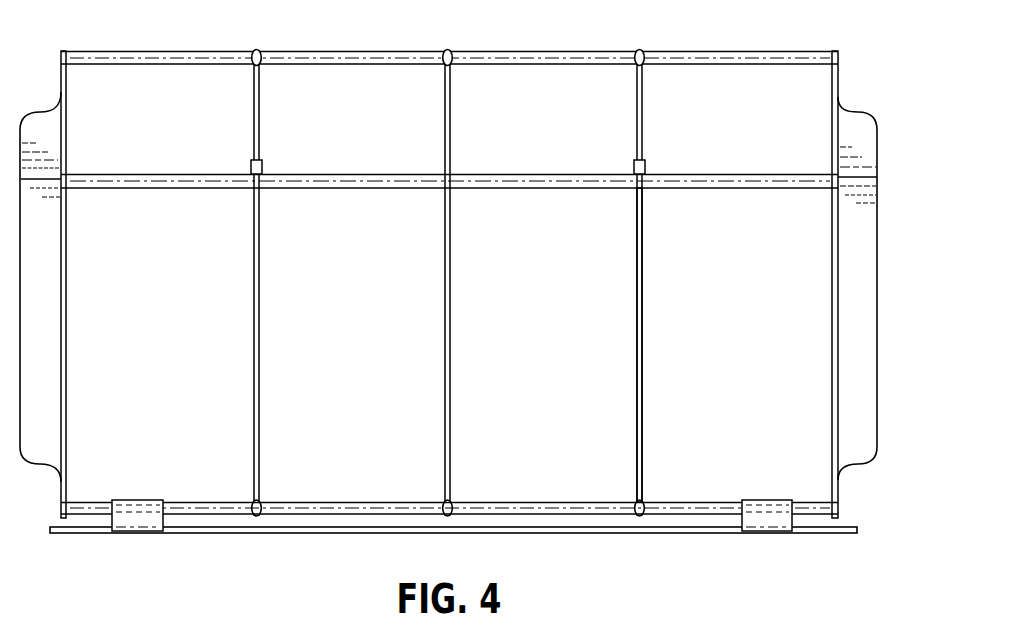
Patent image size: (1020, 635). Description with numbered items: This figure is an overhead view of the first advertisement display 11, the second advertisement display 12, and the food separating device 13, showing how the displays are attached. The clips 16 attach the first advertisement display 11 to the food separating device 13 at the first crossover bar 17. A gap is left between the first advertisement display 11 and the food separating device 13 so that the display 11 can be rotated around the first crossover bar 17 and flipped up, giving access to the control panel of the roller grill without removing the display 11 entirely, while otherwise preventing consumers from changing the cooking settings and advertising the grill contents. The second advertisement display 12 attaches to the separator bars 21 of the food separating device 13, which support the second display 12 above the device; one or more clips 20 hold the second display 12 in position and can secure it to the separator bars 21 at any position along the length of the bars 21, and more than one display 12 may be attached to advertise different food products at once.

The first advertisement display 11 is at (868, 527).
The second advertisement display 12 is at (769, 163).
The food separating device 13 is at (889, 210).
The clips 16 is at (765, 500).
The first crossover bar 17 is at (546, 502).
The clips 20 is at (636, 167).
The separator bars 21 is at (637, 249).